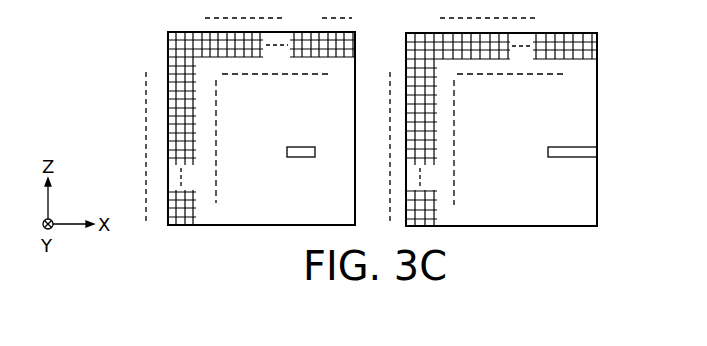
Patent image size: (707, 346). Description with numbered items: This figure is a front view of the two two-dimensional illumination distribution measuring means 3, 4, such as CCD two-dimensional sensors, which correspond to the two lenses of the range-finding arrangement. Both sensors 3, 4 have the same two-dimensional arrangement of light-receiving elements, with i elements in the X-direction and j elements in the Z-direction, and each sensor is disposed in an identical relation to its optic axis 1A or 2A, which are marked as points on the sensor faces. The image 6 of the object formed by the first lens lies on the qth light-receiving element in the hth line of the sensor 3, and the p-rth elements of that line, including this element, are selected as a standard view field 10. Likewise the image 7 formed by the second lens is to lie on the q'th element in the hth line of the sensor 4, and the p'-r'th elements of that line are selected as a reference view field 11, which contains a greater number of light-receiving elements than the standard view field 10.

The two-dimensional illumination distribution measuring means 3 is at (130, 74).
The two-dimensional illumination distribution measuring means 4 is at (604, 64).
The optic axis 1A is at (265, 127).
The optic axis 2A is at (503, 127).
The image 6 is at (309, 151).
The image 7 is at (584, 150).
The standard view field 10 is at (295, 158).
The reference view field 11 is at (561, 158).